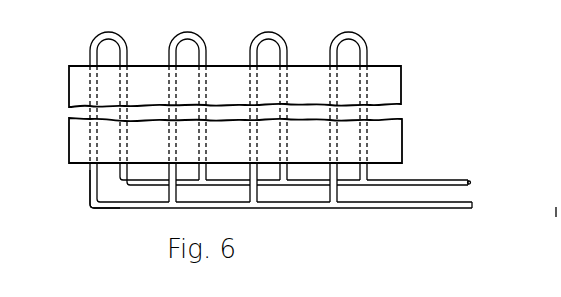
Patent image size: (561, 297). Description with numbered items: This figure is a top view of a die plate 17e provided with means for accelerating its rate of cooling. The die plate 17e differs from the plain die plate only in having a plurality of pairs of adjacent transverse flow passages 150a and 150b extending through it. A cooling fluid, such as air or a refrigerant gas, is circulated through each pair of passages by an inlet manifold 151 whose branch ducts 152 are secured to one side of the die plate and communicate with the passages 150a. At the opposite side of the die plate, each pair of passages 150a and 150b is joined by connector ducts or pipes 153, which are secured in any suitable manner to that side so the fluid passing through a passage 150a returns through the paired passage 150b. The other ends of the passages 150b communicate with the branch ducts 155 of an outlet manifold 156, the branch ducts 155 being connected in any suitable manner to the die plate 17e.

The heat exchange plates 17e is at (66, 127).
The connector ducts or pipes 153 is at (171, 31).
The transverse flow passage 150a is at (93, 68).
The transverse flow passage 150b is at (122, 72).
The inlet manifold 151 is at (450, 206).
The outlet manifold 156 is at (448, 185).
The branch ducts 155 is at (369, 172).
The branch ducts 152 is at (91, 183).